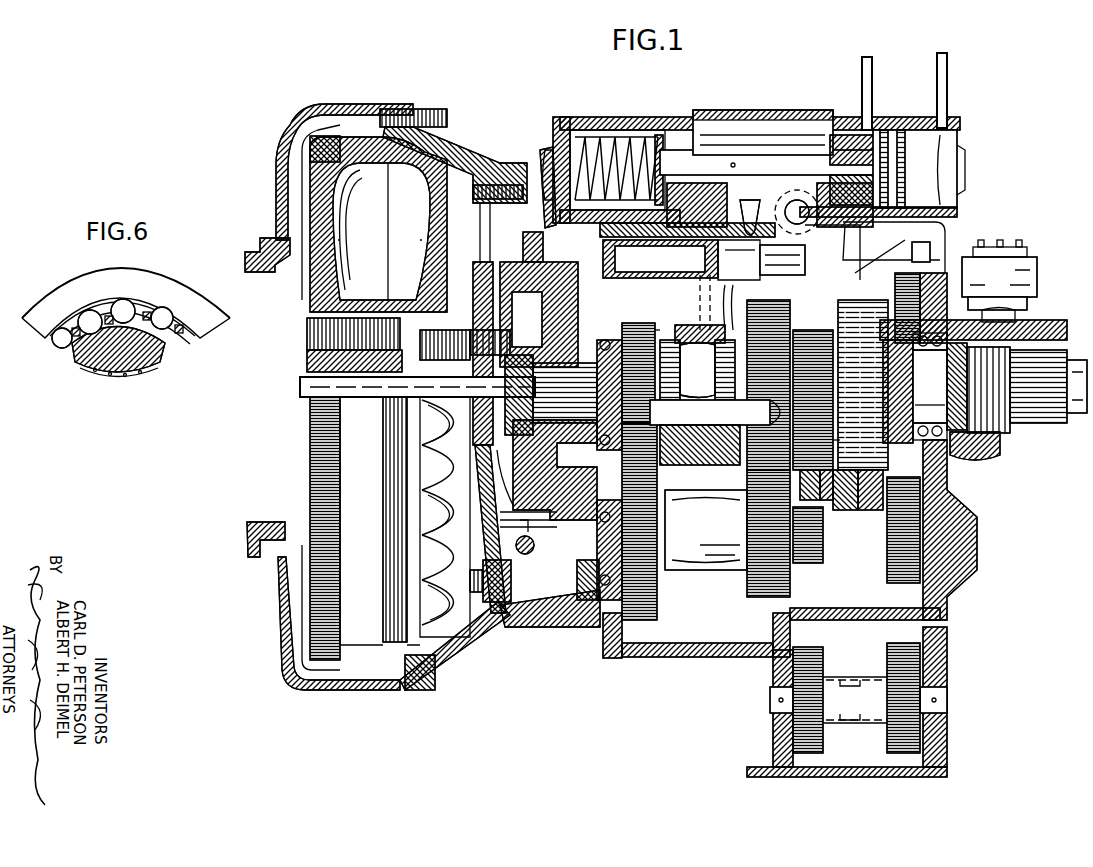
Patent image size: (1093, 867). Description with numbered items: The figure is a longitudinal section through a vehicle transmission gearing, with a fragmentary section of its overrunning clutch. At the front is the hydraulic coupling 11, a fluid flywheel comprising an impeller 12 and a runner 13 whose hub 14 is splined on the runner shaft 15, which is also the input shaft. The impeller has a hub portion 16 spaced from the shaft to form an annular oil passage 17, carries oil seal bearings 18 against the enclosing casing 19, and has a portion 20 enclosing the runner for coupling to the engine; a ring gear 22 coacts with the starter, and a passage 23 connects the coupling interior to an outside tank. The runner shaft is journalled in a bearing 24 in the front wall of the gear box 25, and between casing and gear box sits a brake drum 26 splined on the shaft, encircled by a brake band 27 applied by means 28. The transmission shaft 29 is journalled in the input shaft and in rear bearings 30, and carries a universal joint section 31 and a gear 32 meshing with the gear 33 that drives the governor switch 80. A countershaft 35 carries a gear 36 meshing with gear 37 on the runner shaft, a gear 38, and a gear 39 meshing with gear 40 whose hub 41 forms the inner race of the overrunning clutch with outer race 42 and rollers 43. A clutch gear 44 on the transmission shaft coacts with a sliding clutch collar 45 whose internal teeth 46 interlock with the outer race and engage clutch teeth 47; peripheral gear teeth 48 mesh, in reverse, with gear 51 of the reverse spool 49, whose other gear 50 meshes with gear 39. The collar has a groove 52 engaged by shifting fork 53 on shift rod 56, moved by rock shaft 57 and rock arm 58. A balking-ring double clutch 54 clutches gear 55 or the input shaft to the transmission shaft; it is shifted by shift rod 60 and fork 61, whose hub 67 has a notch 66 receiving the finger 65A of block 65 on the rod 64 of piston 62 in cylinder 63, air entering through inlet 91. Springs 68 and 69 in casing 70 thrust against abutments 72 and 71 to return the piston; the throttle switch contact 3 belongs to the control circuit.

In FIG. 1, the contact 3 is at (500, 690).
In FIG. 1, the hydraulic coupling 11 is at (380, 521).
In FIG. 1, the impeller 12 is at (412, 226).
In FIG. 1, the runner 13 is at (358, 226).
In FIG. 1, the hub 14 is at (392, 335).
In FIG. 1, the runner shaft 15 is at (417, 388).
In FIG. 1, the hub portion 16 is at (430, 352).
In FIG. 1, the annular hydraulic fluid passage 17 is at (364, 366).
In FIG. 1, the oil seal bearings 18 is at (445, 395).
In FIG. 1, the casing 19 is at (462, 150).
In FIG. 1, the portion 20 is at (370, 155).
In FIG. 1, the ring gear 22 is at (310, 470).
In FIG. 1, the passage 23 is at (500, 182).
In FIG. 1, the bearing 24 is at (640, 330).
In FIG. 1, the gear box 25 is at (603, 625).
In FIG. 1, the brake drum 26 is at (539, 314).
In FIG. 1, the brake band 27 is at (537, 545).
In FIG. 1, the brake applying means 28 is at (540, 250).
In FIG. 1, the transmission shaft 29 is at (915, 388).
In FIG. 1, the bearings 30 is at (965, 457).
In FIG. 1, the universal joint section 31 is at (1058, 433).
In FIG. 1, the gear 32 is at (998, 432).
In FIG. 1, the gear 33 is at (1018, 317).
In FIG. 1, the countershaft 35 is at (706, 530).
In FIG. 1, the gear 36 is at (655, 590).
In FIG. 1, the gear 37 is at (645, 330).
In FIG. 1, the gear 38 is at (760, 585).
In FIG. 1, the gear 39 is at (893, 550).
In FIG. 1, the gear 40 is at (935, 262).
In FIG. 1, the hub 41 is at (870, 470).
In FIG. 6, the hub 41 is at (75, 352).
In FIG. 1, the outer race 42 is at (845, 490).
In FIG. 1, the rollers 43 is at (826, 485).
In FIG. 6, the rollers 43 is at (165, 328).
In FIG. 1, the clutch gear 44 is at (800, 318).
In FIG. 1, the clutch collar 45 is at (852, 500).
In FIG. 1, the teeth 46 is at (866, 500).
In FIG. 1, the clutch teeth 47 is at (808, 480).
In FIG. 1, the gear teeth 48 is at (812, 510).
In FIG. 1, the reverse spool 49 is at (857, 678).
In FIG. 1, the gear 50 is at (897, 648).
In FIG. 1, the gear 51 is at (812, 650).
In FIG. 1, the groove 52 is at (930, 395).
In FIG. 1, the shifting fork 53 is at (825, 325).
In FIG. 1, the double clutch 54 is at (690, 332).
In FIG. 1, the gear 55 is at (728, 362).
In FIG. 1, the shift rod 56 is at (925, 250).
In FIG. 1, the rock shaft 57 is at (797, 212).
In FIG. 1, the rock arm 58 is at (770, 250).
In FIG. 1, the shift rod 60 is at (660, 259).
In FIG. 1, the fork 61 is at (698, 310).
In FIG. 1, the piston 62 is at (900, 130).
In FIG. 1, the cylinder 63 is at (945, 140).
In FIG. 1, the piston rod 64 is at (808, 150).
In FIG. 1, the block 65 is at (745, 130).
In FIG. 1, the finger 65A is at (738, 222).
In FIG. 1, the notch 66 is at (720, 245).
In FIG. 1, the hub 67 is at (735, 307).
In FIG. 1, the returning spring 68 is at (625, 130).
In FIG. 1, the spring 69 is at (573, 125).
In FIG. 1, the cylindrical casing 70 is at (578, 117).
In FIG. 1, the abutment 71 is at (658, 135).
In FIG. 1, the abutment 72 is at (548, 125).
In FIG. 1, the speed governor switch 80 is at (1015, 276).
In FIG. 1, the inlet 91 is at (872, 125).